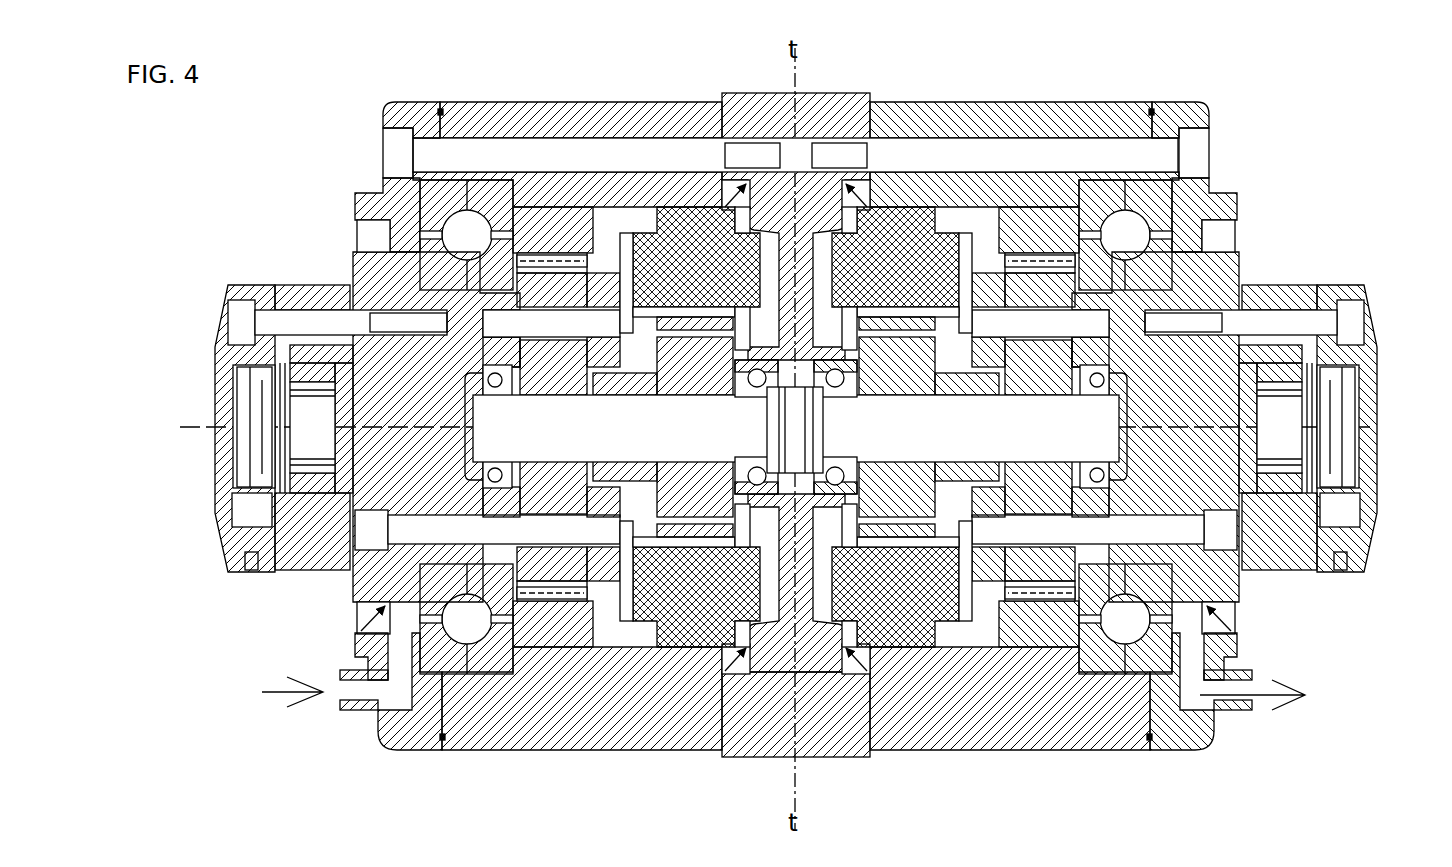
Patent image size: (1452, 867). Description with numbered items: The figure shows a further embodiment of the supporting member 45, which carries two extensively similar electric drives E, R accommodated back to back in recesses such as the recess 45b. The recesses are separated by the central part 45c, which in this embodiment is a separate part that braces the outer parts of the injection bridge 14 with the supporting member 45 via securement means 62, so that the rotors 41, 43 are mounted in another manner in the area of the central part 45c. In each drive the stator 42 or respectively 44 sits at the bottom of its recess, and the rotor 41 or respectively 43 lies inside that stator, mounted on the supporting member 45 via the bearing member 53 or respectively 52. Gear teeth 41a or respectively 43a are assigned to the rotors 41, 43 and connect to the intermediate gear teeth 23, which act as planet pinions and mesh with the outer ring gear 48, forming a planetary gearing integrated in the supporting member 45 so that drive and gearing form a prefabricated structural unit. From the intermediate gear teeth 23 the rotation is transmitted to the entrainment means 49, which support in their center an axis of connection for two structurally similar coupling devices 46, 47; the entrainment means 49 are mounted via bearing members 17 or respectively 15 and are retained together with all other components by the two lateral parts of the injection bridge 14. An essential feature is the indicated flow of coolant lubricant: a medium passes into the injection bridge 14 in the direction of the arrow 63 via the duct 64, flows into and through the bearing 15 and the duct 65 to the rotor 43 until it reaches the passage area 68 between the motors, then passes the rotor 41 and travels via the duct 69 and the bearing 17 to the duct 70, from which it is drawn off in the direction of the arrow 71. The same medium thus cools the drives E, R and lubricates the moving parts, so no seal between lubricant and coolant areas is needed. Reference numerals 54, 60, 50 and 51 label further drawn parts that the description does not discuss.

The injection bridge 14 is at (418, 118).
The bearing member 15 is at (468, 228).
The securement means 62 is at (520, 150).
The intermediate gear teeth 23 is at (545, 270).
The seal 54 is at (384, 246).
The supporting member 45 is at (645, 120).
The central part 45c is at (828, 118).
The recess 45b is at (815, 745).
The stator 44 is at (690, 245).
The stator 42 is at (902, 245).
The outer ring gear 48 is at (1058, 210).
The bearing member 17 is at (1147, 118).
The hub assembly 60 is at (312, 268).
The entrainment means 49 is at (385, 283).
The coupling device 46 is at (228, 368).
The coupling device 47 is at (1365, 355).
The gear teeth 43a is at (353, 602).
The gear teeth 41a is at (1238, 592).
The arrow 63 is at (270, 706).
The duct 64 is at (373, 712).
The duct 65 is at (528, 752).
The rotor 43 is at (697, 690).
The rotor 41 is at (903, 690).
The duct 69 is at (1078, 700).
The duct 70 is at (1190, 712).
The arrow 71 is at (1258, 705).
The left shaft bearing 50 is at (497, 386).
The right shaft bearing 51 is at (1095, 386).
The bearing member 52 is at (755, 386).
The bearing member 53 is at (837, 386).
The passage area 68 is at (772, 462).
The electric drive R is at (703, 198).
The electric drive E is at (886, 198).